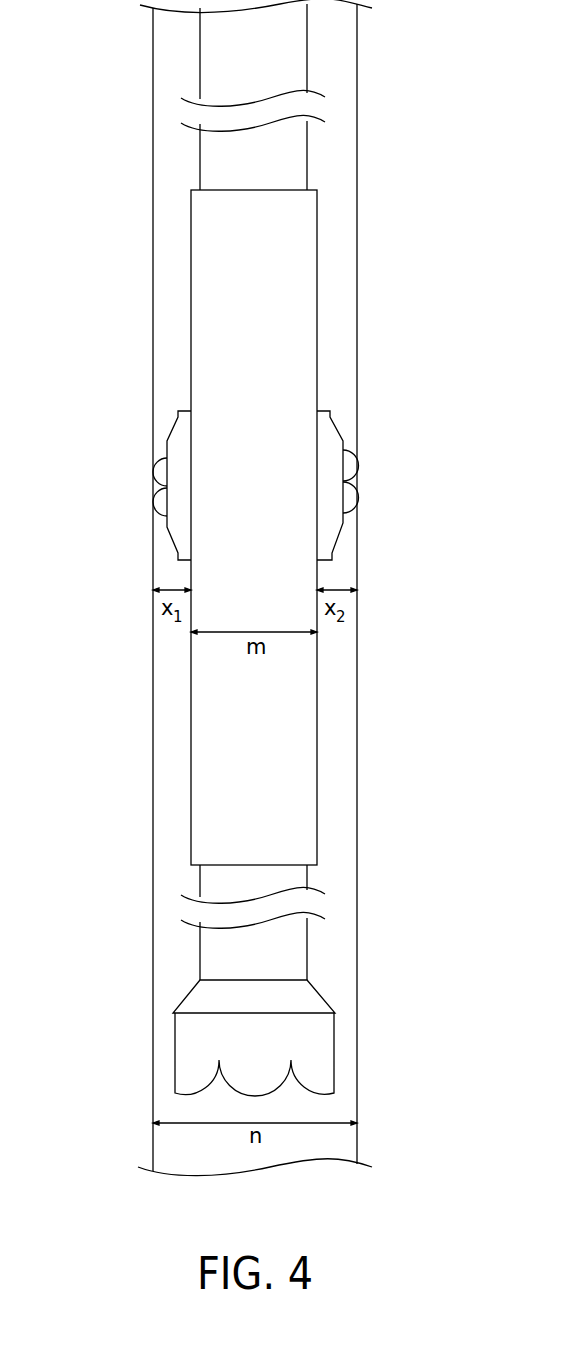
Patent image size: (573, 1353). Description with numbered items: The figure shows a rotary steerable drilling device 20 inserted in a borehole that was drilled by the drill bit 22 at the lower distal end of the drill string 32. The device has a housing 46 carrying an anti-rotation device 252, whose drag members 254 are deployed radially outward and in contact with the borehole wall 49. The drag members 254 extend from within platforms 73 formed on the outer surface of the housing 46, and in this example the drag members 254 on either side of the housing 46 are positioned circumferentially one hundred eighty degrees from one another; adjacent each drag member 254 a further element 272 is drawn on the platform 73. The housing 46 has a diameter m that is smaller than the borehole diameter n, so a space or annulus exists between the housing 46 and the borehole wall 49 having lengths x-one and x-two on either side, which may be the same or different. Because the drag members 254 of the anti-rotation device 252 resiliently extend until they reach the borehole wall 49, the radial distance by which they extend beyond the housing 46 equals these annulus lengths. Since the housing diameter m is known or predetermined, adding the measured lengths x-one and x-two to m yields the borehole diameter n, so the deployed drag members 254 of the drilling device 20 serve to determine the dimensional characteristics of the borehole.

The rotary steerable drilling device 20 is at (188, 181).
The drill bit 22 is at (334, 1058).
The drill string 32 is at (290, 69).
The housing 46 is at (317, 255).
The borehole wall 49 is at (349, 633).
The platform 73 is at (177, 420).
The anti-rotation device 252 is at (367, 423).
The drag member 254 is at (158, 476).
The seal cup 272 is at (155, 504).